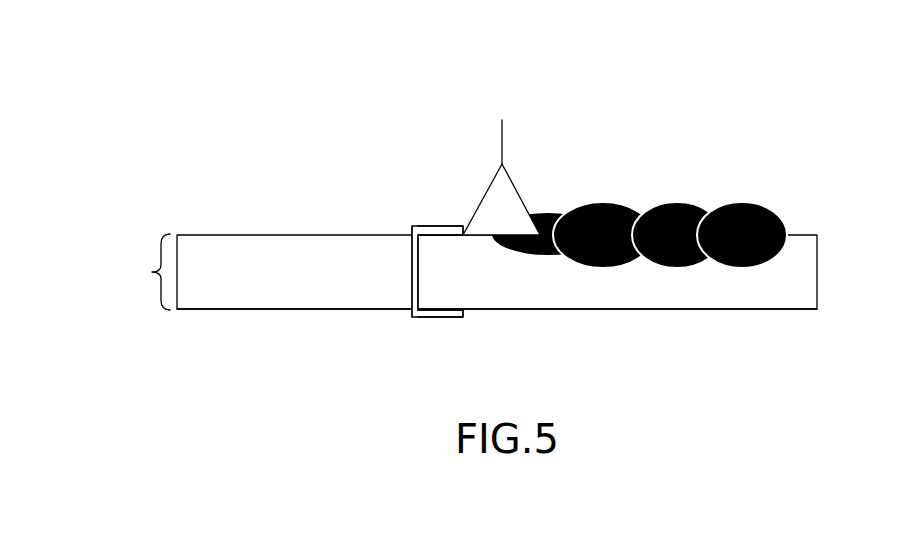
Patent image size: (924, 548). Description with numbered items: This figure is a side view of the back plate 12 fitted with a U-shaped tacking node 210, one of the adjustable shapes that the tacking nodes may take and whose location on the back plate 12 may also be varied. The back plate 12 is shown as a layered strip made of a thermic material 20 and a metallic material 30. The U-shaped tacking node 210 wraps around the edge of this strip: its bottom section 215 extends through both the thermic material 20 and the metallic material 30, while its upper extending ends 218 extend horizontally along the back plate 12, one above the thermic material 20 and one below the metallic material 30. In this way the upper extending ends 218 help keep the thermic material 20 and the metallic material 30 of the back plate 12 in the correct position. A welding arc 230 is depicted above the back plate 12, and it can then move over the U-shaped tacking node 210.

The back plate 12 is at (151, 272).
The thermic material 20 is at (817, 271).
The metallic material 30 is at (617, 310).
The U-shaped tacking node 210 is at (412, 318).
The bottom section 215 is at (410, 272).
The upper extending ends 218 is at (428, 226).
The welding arc 230 is at (503, 141).